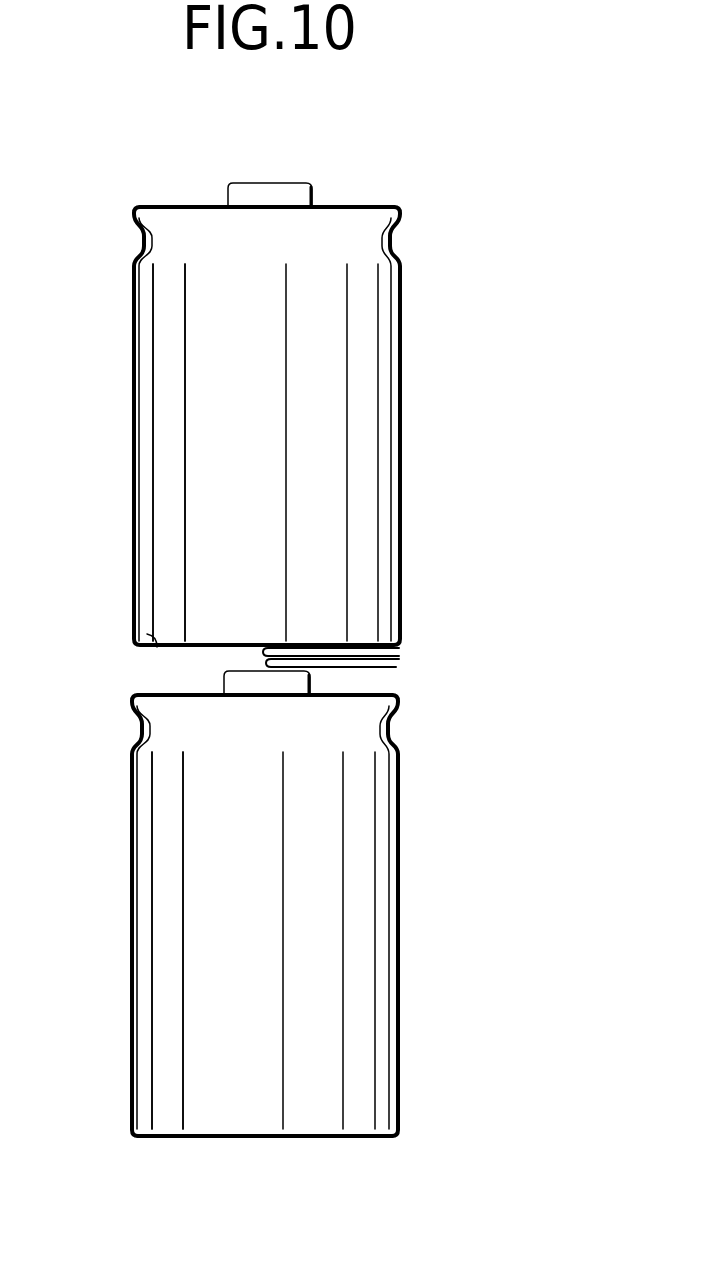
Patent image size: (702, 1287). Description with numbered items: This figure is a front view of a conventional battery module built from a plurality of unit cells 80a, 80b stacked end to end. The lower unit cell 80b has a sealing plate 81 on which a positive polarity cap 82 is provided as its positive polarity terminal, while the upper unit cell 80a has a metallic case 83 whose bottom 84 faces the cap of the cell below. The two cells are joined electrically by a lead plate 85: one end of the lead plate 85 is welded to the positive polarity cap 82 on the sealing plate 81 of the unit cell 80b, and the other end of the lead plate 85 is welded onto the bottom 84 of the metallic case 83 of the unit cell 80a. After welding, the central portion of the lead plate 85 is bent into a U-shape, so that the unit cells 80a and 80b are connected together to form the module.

The unit cell 80a is at (442, 447).
The unit cell 80b is at (442, 889).
The sealing plate 81 is at (165, 205).
The positive polarity cap 82 is at (266, 183).
The metallic case 83 is at (167, 453).
The bottom 84 is at (147, 634).
The lead plate 85 is at (399, 662).